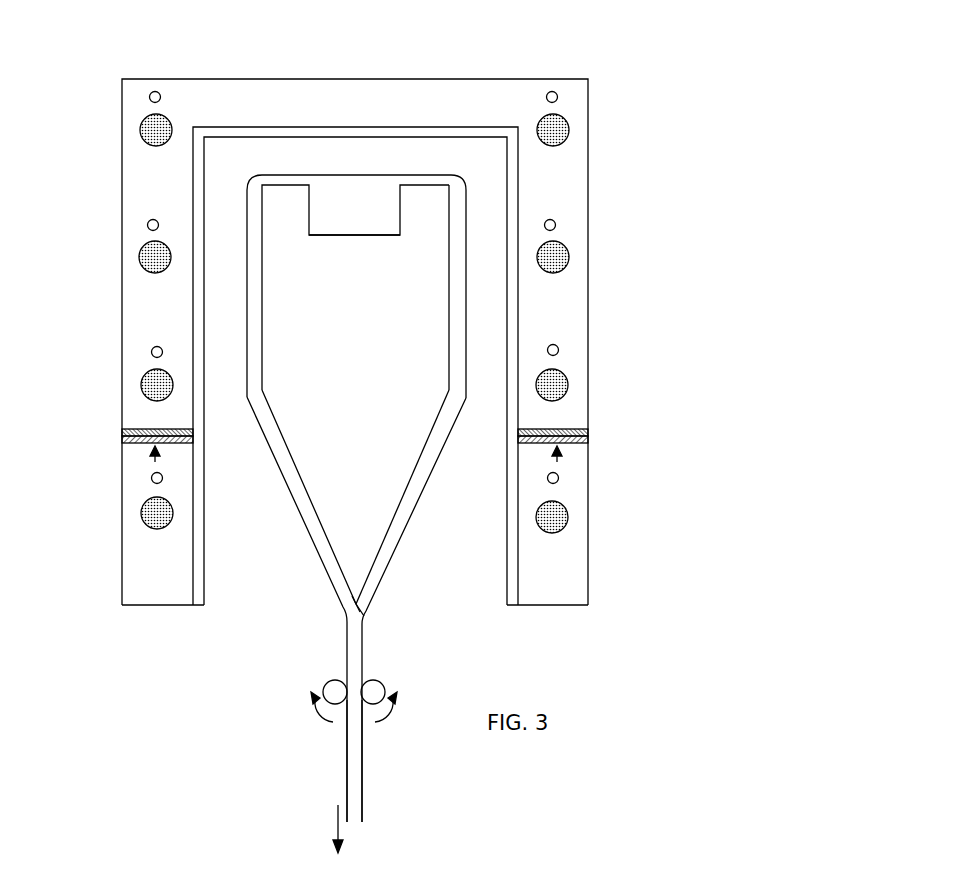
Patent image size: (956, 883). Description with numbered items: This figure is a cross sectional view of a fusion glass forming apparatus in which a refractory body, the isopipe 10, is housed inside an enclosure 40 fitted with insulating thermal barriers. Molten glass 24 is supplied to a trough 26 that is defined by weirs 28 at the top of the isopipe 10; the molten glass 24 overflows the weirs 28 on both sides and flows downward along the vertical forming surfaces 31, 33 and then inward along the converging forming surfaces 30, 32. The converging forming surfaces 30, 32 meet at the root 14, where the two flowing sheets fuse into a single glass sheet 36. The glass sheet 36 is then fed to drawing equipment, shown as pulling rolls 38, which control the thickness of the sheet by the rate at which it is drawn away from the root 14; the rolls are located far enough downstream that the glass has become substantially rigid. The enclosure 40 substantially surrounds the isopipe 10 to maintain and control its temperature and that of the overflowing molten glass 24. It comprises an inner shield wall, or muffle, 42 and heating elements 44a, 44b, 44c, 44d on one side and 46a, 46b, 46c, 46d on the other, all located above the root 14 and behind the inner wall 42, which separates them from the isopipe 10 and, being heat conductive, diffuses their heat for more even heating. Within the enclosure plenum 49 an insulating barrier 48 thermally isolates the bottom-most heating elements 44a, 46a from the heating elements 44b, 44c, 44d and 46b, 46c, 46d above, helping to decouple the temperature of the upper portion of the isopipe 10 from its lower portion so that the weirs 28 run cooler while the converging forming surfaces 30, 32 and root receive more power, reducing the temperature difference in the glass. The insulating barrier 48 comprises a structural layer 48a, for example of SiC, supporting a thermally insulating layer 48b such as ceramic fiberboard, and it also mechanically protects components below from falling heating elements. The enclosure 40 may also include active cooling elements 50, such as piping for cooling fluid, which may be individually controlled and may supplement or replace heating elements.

The refractory body (isopipe) 10 is at (375, 337).
The root 14 is at (364, 616).
The molten glass 24 is at (379, 175).
The trough 26 is at (379, 233).
The weirs 28 is at (288, 183).
The converging forming surface 30 is at (418, 457).
The vertical forming surface 31 is at (452, 298).
The converging forming surface 32 is at (288, 458).
The vertical forming surface 33 is at (258, 280).
The glass sheet 36 is at (360, 750).
The pulling rolls 38 is at (325, 682).
The enclosure 40 is at (472, 80).
The inner shield wall (muffle) 42 is at (205, 563).
The heating element 44a is at (550, 533).
The heating element 44b is at (560, 368).
The heating element 44c is at (567, 250).
The heating element 44d is at (553, 147).
The heating element 46a is at (157, 530).
The heating element 46b is at (142, 375).
The heating element 46c is at (140, 253).
The heating element 46d is at (155, 147).
The insulating barrier 48 is at (153, 462).
The structural layer 48a is at (122, 446).
The thermally insulating layer 48b is at (140, 429).
The enclosure plenum 49 is at (145, 305).
The active cooling elements 50 is at (147, 97).